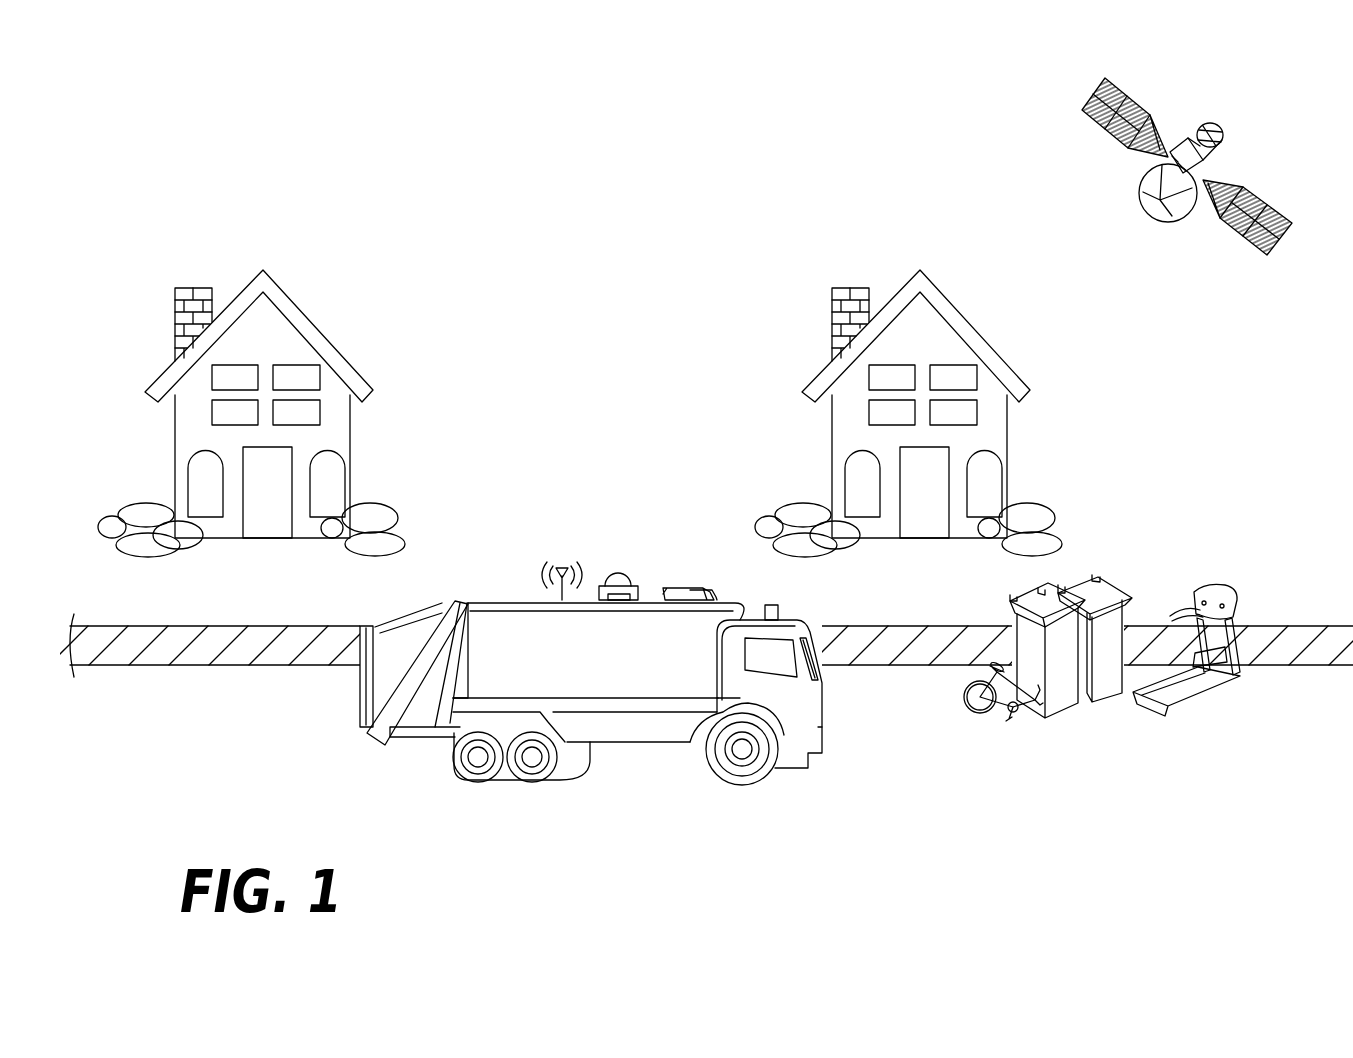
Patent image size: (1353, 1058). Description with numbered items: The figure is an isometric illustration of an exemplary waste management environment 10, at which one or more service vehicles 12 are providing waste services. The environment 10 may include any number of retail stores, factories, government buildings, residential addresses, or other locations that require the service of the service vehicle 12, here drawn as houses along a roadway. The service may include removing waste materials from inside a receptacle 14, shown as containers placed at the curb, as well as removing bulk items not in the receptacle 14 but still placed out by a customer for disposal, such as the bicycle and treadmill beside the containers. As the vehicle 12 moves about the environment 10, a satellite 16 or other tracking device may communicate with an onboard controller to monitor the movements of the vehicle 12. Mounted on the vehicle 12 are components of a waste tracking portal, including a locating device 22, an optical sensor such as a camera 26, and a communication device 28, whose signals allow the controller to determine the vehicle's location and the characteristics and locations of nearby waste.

The waste management environment 10 is at (653, 326).
The service vehicle 12 is at (582, 665).
The receptacle 14 is at (1067, 718).
The satellite 16 is at (1140, 183).
The locating device 22 is at (618, 583).
The optical sensor 26 is at (685, 584).
The communication device 28 is at (562, 566).